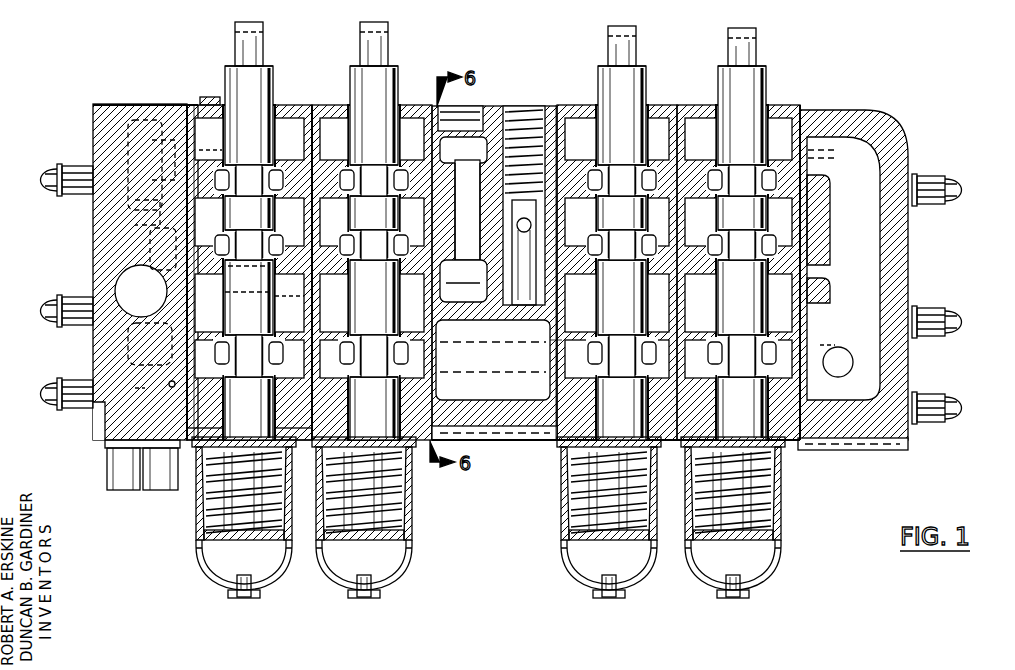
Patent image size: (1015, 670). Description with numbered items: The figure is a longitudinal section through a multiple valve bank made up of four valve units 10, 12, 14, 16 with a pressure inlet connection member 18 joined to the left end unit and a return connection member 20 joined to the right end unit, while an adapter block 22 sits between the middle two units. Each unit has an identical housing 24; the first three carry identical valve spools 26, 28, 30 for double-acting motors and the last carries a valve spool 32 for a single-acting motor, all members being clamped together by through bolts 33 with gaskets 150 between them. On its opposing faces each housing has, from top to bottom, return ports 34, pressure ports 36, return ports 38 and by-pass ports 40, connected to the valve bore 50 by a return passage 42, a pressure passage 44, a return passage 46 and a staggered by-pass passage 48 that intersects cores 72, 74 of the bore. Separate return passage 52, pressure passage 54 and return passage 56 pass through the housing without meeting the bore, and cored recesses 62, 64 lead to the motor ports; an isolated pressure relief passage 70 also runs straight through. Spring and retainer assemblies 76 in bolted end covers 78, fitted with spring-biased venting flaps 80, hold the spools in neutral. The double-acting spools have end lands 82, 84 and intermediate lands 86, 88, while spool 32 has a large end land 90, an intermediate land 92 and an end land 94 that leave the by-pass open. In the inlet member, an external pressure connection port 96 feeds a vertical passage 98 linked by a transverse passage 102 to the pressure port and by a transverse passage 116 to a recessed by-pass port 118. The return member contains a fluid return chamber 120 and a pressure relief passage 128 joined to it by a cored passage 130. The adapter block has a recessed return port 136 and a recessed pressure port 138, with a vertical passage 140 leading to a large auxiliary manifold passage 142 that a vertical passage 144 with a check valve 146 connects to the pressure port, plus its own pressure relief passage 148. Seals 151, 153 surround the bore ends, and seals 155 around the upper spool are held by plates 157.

The valve unit 10 is at (307, 91).
The valve unit 12 is at (424, 91).
The valve unit 14 is at (672, 98).
The valve unit 16 is at (797, 98).
The pressure inlet connection member 18 is at (78, 121).
The return connection member 20 is at (870, 106).
The adapter block 22 is at (526, 98).
The housing 24 is at (313, 105).
The valve spool 26 is at (265, 36).
The valve spool 28 is at (390, 36).
The valve spool 30 is at (637, 42).
The valve spool 32 is at (758, 44).
The through bolts 33 is at (46, 180).
The return port 34 is at (162, 108).
The pressure port 36 is at (165, 180).
The return port 38 is at (249, 299).
The by-pass port 40 is at (150, 344).
The return passage 42 is at (225, 152).
The pressure passage 44 is at (163, 249).
The return passage 46 is at (249, 272).
The by-pass passage 48 is at (493, 356).
The valve bore 50 is at (218, 432).
The return passage 52 is at (816, 166).
The pressure passage 54 is at (832, 212).
The return passage 56 is at (808, 286).
The cored recess 62 is at (495, 180).
The cored recess 64 is at (495, 245).
The pressure relief passage 70 is at (552, 352).
The core 72 is at (277, 314).
The core 74 is at (308, 406).
The spring and retainer assembly 76 is at (196, 518).
The end cover 78 is at (206, 572).
The spring-biased venting flap 80 is at (250, 598).
The end land 82 is at (435, 115).
The end land 84 is at (435, 408).
The intermediate land 86 is at (495, 213).
The intermediate land 88 is at (435, 297).
The large end land 90 is at (742, 115).
The intermediate land 92 is at (742, 297).
The end land 94 is at (742, 408).
The external pressure connection port 96 is at (132, 274).
The vertical passage 98 is at (134, 172).
The transverse passage 102 is at (137, 202).
The transverse passage 116 is at (135, 389).
The recessed by-pass port 118 is at (169, 386).
The fluid return chamber 120 is at (856, 223).
The pressure relief passage 128 is at (830, 352).
The cored passage 130 is at (852, 377).
The recessed return port 136 is at (485, 295).
The recessed pressure port 138 is at (462, 183).
The vertical passage 140 is at (493, 359).
The auxiliary manifold passage 142 is at (488, 396).
The vertical passage 144 is at (528, 322).
The check valve 146 is at (463, 280).
The pressure relief passage 148 is at (480, 370).
The gasket 150 is at (195, 114).
The seal 151 is at (556, 108).
The seal 153 is at (556, 441).
The seal 155 is at (222, 97).
The plate 157 is at (208, 100).